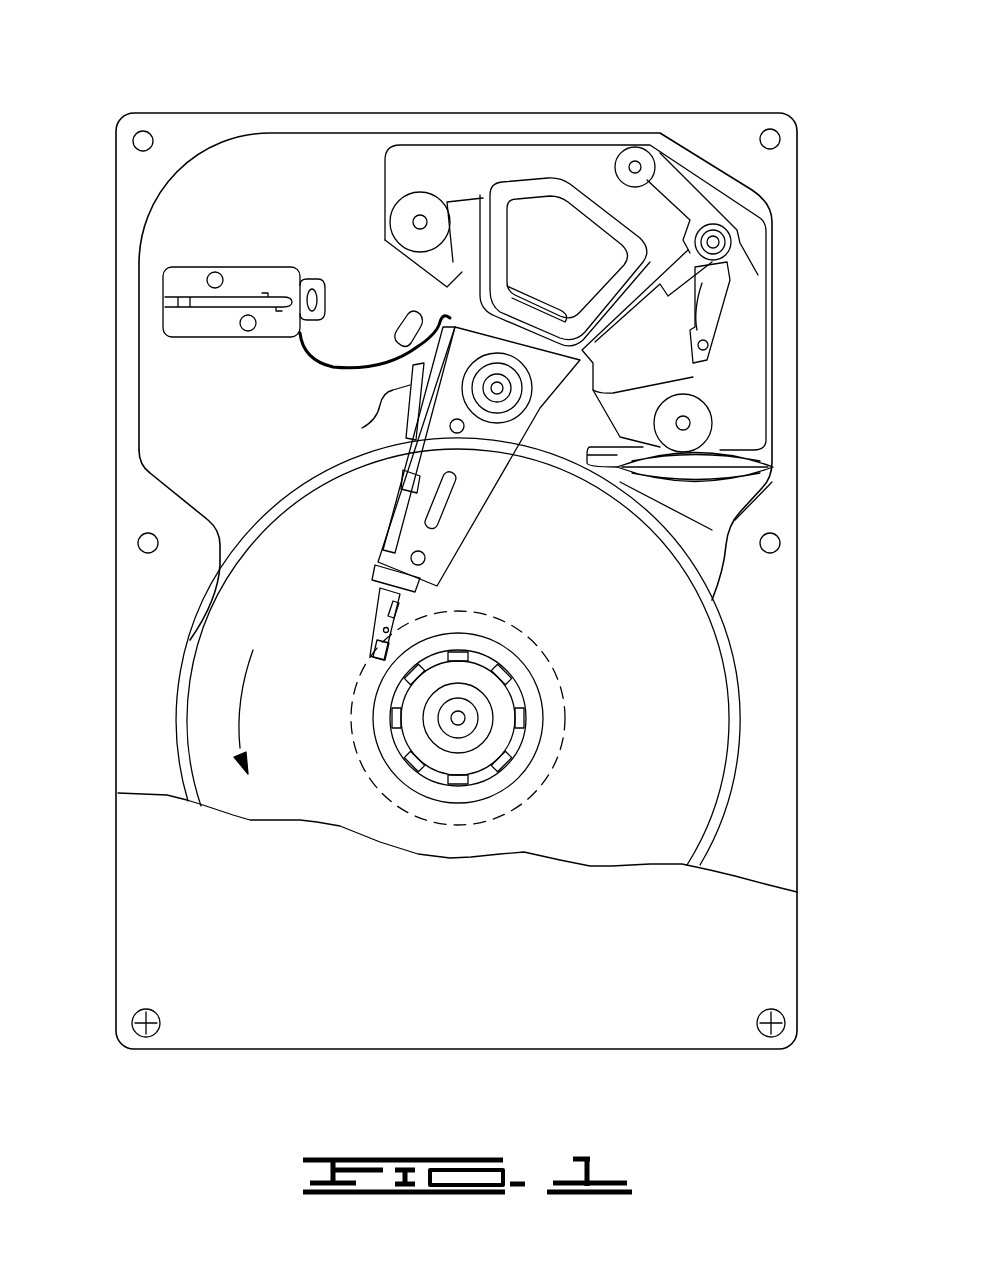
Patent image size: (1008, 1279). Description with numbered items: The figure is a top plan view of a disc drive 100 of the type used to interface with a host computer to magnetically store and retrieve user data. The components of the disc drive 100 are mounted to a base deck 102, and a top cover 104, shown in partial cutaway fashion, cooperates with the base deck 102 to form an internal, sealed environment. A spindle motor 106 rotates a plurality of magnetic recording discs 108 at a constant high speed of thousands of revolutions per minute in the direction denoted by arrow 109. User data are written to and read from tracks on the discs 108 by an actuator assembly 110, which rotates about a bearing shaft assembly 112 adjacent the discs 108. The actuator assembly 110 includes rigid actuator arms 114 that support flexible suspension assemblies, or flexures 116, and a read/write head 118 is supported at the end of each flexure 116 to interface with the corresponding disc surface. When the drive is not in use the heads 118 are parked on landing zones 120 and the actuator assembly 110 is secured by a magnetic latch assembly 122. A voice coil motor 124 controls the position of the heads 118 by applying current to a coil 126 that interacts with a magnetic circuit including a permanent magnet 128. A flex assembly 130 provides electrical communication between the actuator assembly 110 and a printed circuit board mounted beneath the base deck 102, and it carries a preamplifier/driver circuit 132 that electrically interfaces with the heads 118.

The disc drive 100 is at (240, 76).
The base deck 102 is at (175, 396).
The top cover 104 is at (174, 865).
The spindle motor 106 is at (486, 714).
The magnetic recording discs 108 is at (705, 727).
The arrow 109 is at (238, 703).
The actuator assembly 110 is at (480, 445).
The bearing shaft assembly 112 is at (503, 401).
The actuator arms 114 is at (457, 520).
The flexible suspension assemblies 116 is at (387, 602).
The read/write head 118 is at (370, 637).
The landing zones 120 is at (555, 775).
The magnetic latch assembly 122 is at (713, 288).
The voice coil motor 124 is at (573, 158).
The coil 126 is at (513, 188).
The permanent magnet 128 is at (665, 365).
The flex assembly 130 is at (344, 367).
The preamplifier/driver circuit 132 is at (362, 430).